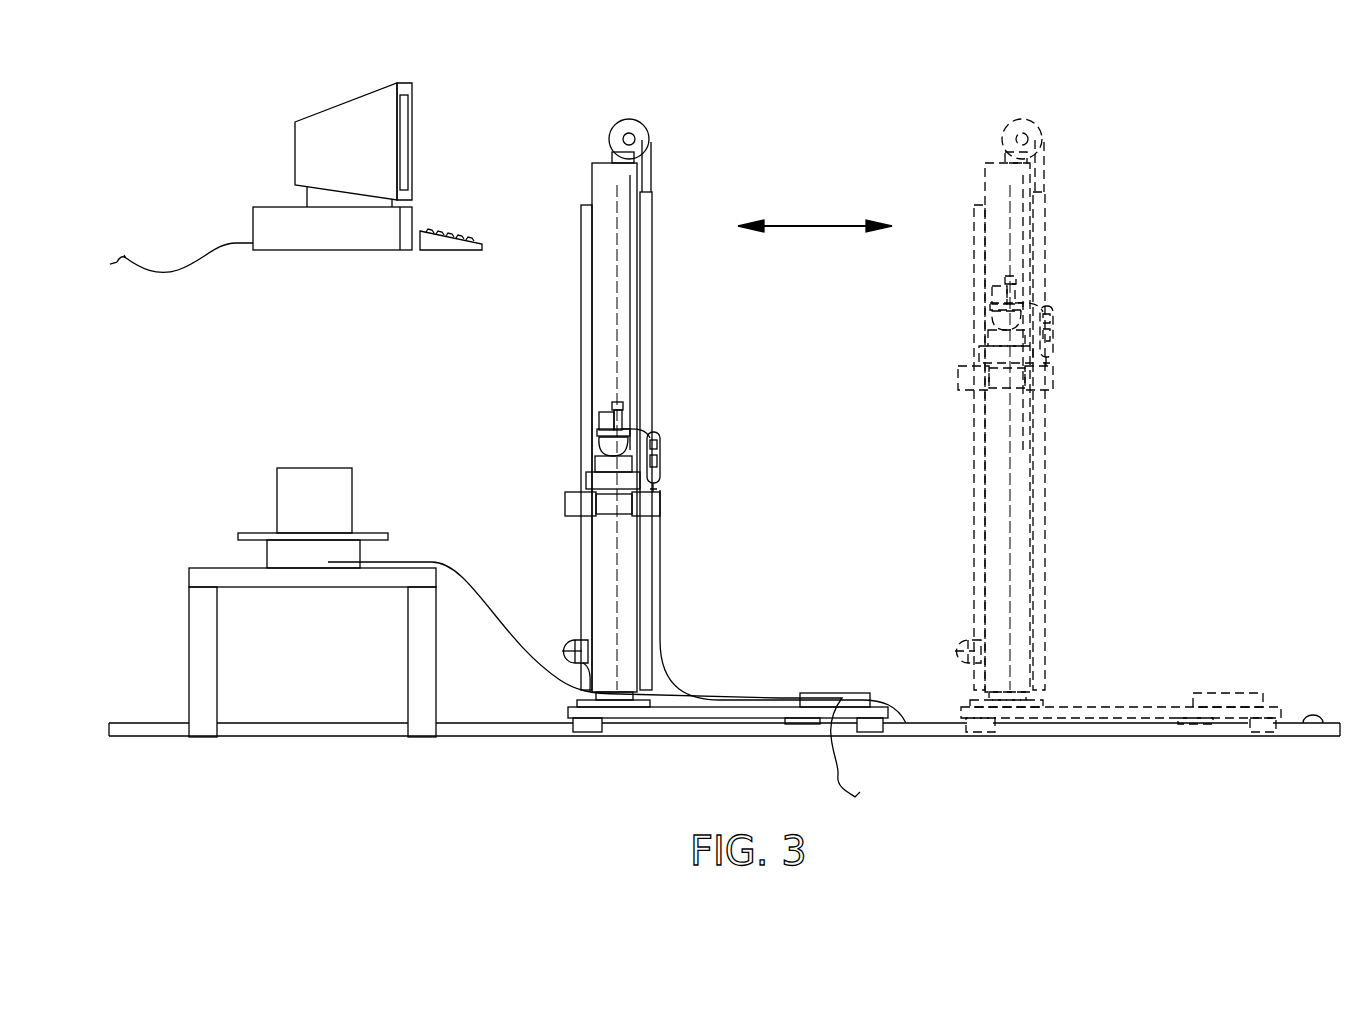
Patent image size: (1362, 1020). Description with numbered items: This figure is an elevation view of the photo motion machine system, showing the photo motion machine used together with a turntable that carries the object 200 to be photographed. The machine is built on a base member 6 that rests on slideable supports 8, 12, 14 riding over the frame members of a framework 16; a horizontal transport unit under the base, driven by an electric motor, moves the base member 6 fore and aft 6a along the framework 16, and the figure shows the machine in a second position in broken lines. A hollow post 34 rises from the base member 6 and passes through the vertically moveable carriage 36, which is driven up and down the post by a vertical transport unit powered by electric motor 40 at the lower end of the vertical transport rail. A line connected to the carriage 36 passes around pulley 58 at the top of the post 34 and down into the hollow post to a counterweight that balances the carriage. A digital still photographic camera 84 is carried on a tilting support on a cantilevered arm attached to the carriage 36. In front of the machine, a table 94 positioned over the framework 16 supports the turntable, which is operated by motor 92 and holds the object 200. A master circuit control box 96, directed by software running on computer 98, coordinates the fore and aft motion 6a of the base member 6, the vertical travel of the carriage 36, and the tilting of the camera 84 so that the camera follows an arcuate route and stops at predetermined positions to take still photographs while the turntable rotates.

The base member 6 is at (757, 713).
The fore and aft direction 6a is at (814, 226).
The slideable support 8 is at (583, 733).
The slideable support 12 is at (872, 732).
The slideable support 14 is at (798, 724).
The framework 16 is at (1326, 732).
The hollow post 34 is at (612, 323).
The vertically moveable carriage 36 is at (650, 507).
The electric motor 40 is at (570, 652).
The pulley 58 is at (643, 120).
The digital still photographic camera 84 is at (624, 404).
The motor 92 is at (290, 557).
The table 94 is at (203, 576).
The master circuit control box 96 is at (810, 696).
The computer 98 is at (277, 215).
The object to be photographed 200 is at (333, 493).